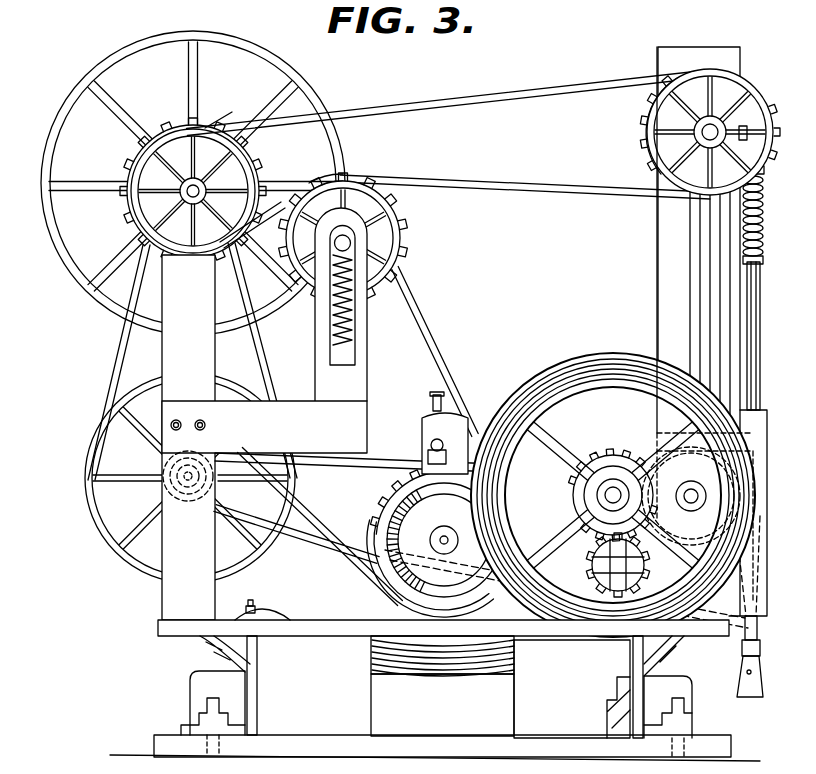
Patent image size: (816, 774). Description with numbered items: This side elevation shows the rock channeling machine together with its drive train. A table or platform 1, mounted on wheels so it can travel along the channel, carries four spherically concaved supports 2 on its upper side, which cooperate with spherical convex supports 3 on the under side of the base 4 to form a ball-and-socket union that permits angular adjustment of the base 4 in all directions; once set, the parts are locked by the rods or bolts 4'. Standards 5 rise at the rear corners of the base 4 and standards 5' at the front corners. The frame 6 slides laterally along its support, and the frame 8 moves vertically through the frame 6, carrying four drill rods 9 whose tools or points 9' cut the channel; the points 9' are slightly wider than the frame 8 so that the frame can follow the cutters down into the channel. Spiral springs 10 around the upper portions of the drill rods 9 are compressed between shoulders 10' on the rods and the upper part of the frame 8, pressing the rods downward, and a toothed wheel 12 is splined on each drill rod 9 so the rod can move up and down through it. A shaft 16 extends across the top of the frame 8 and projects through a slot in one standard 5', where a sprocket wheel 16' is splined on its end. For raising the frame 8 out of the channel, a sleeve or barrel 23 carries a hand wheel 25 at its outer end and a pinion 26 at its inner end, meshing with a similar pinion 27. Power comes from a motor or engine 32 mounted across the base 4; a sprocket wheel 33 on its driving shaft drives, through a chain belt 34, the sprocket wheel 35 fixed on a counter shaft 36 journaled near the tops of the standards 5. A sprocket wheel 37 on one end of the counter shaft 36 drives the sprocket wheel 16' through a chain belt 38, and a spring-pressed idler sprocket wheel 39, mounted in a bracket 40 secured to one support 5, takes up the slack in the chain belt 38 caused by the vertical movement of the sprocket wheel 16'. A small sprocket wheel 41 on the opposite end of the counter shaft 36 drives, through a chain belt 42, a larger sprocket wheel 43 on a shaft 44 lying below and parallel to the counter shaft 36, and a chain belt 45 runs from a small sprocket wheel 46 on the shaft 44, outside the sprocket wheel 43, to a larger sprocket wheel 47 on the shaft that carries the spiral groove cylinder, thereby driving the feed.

The table or platform 1 is at (309, 744).
The spherically concaved supports or brackets 2 is at (436, 698).
The spherical convex supports or brackets 3 is at (242, 629).
The base 4 is at (443, 649).
The rods or bolts 4' is at (445, 687).
The standards or supports 5 is at (188, 437).
The standards 5' is at (699, 331).
The frame 6 is at (762, 421).
The frame 8 is at (764, 174).
The drill rods 9 is at (765, 336).
The tools or points 9' is at (750, 672).
The spiral springs 10 is at (771, 216).
The shoulders 10' is at (772, 248).
The toothed wheel 12 is at (737, 150).
The shaft 16 is at (716, 125).
The sprocket wheel 16' is at (694, 125).
The sleeve or barrel 23 is at (540, 415).
The hand wheel 25 is at (568, 364).
The pinion 26 is at (605, 455).
The pinion 27 is at (670, 486).
The source of power 32 is at (445, 433).
The sprocket wheel 33 is at (390, 500).
The chain belt 34 is at (432, 345).
The sprocket wheel 35 is at (70, 253).
The counter shaft 36 is at (190, 191).
The sprocket wheel 37 is at (250, 163).
The chain belt 38 is at (468, 100).
The spring-pressed idler sprocket wheel 39 is at (398, 236).
The bracket 40 is at (264, 330).
The small sprocket wheel 41 is at (200, 142).
The chain belt 42 is at (106, 368).
The larger sprocket wheel 43 is at (190, 478).
The shaft 44 is at (188, 502).
The chain belt 45 is at (314, 542).
The small sprocket wheel 46 is at (175, 462).
The larger sprocket wheel 47 is at (608, 574).